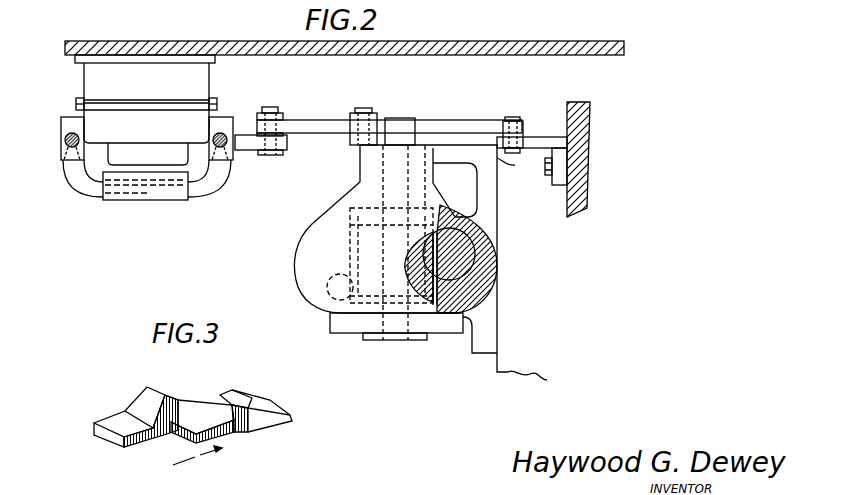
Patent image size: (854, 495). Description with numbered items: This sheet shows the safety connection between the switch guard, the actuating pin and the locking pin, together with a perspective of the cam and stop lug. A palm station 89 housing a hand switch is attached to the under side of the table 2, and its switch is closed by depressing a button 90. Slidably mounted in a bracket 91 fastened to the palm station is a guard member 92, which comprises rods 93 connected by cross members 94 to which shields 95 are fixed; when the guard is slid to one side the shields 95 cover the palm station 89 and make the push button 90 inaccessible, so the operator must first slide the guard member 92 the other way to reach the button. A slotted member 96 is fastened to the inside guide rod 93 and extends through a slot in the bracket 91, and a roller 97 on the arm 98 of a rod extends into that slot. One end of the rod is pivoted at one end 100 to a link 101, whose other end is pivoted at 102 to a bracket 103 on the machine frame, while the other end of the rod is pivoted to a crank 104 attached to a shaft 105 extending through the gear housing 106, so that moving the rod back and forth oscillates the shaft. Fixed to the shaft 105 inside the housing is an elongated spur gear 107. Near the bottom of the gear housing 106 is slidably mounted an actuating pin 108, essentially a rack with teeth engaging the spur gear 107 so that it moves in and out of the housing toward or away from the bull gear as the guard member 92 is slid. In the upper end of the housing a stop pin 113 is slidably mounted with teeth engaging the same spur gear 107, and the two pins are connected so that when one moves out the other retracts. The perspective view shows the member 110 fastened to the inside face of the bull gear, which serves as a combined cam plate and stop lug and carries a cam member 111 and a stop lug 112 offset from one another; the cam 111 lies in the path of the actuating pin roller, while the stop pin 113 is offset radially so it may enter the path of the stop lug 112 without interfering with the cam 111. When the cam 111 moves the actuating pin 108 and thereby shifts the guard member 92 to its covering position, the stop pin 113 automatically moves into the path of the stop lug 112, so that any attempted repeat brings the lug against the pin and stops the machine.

In FIG. 2, the table 2 is at (103, 50).
In FIG. 2, the palm station 89 is at (98, 83).
In FIG. 2, the button 90 is at (112, 157).
In FIG. 2, the bracket 91 is at (65, 125).
In FIG. 2, the guard member 92 is at (105, 185).
In FIG. 2, the rod 93 is at (62, 143).
In FIG. 2, the cross member 94 is at (207, 192).
In FIG. 2, the shield 95 is at (148, 180).
In FIG. 2, the slotted member 96 is at (247, 147).
In FIG. 2, the roller 97 is at (287, 150).
In FIG. 2, the arm 98 is at (303, 123).
In FIG. 2, the pivot end 100 is at (367, 110).
In FIG. 2, the link 101 is at (473, 125).
In FIG. 2, the pivot 102 is at (517, 120).
In FIG. 2, the bracket 103 is at (560, 180).
In FIG. 2, the crank 104 is at (420, 140).
In FIG. 2, the shaft 105 is at (360, 180).
In FIG. 2, the gear housing 106 is at (300, 245).
In FIG. 2, the spur gear 107 is at (432, 317).
In FIG. 2, the actuating pin 108 is at (325, 288).
In FIG. 3, the member 110 is at (287, 420).
In FIG. 3, the cam member 111 is at (252, 403).
In FIG. 3, the stop lug 112 is at (183, 390).
In FIG. 2, the stop pin 113 is at (467, 258).